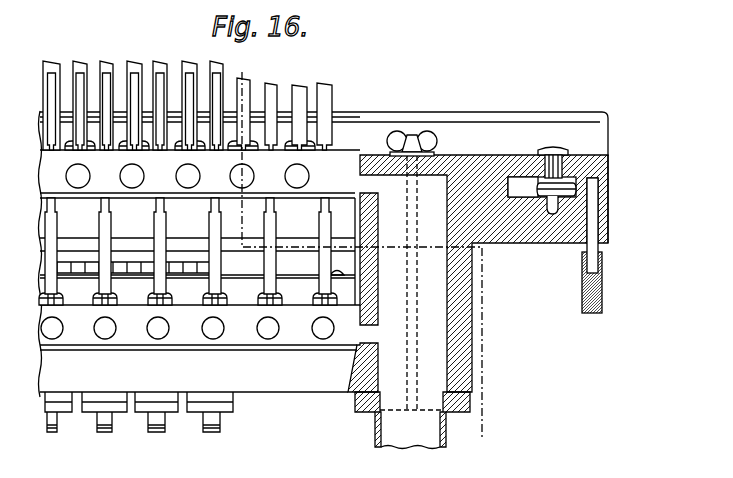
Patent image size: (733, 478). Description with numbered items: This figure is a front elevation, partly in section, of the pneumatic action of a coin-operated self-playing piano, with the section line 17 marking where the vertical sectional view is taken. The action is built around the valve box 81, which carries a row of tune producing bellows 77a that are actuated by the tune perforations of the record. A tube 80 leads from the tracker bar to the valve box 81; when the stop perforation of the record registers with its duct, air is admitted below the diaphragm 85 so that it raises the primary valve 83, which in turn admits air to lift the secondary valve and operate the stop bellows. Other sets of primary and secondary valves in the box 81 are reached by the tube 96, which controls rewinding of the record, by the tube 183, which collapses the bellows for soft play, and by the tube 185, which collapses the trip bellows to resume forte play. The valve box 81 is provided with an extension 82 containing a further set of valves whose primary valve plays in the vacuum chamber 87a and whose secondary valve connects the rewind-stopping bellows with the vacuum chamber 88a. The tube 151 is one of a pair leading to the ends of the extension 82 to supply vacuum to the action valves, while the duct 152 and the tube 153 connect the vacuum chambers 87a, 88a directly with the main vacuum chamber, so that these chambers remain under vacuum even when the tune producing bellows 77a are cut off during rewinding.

The section line 17— 17 is at (363, 259).
The tube 80 is at (250, 85).
The tube 185 is at (272, 88).
The tube 183 is at (298, 100).
The tube 96 is at (328, 139).
The valve box 81 is at (200, 227).
The vacuum chamber 87a is at (522, 177).
The primary valve 83 is at (557, 148).
The vacuum chamber 88a is at (611, 162).
The diaphragm 85 is at (574, 190).
The duct 152 is at (607, 211).
The tube 153 is at (592, 314).
The extension of valve box 82 is at (531, 236).
The tube 151 is at (412, 420).
The tune producing bellows 77a is at (152, 395).